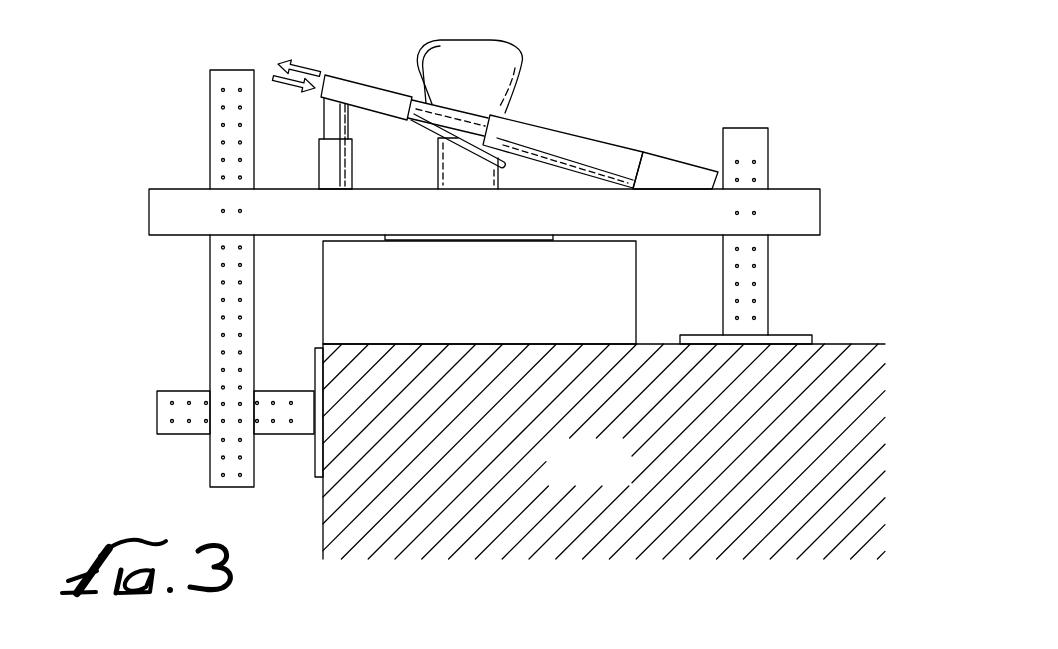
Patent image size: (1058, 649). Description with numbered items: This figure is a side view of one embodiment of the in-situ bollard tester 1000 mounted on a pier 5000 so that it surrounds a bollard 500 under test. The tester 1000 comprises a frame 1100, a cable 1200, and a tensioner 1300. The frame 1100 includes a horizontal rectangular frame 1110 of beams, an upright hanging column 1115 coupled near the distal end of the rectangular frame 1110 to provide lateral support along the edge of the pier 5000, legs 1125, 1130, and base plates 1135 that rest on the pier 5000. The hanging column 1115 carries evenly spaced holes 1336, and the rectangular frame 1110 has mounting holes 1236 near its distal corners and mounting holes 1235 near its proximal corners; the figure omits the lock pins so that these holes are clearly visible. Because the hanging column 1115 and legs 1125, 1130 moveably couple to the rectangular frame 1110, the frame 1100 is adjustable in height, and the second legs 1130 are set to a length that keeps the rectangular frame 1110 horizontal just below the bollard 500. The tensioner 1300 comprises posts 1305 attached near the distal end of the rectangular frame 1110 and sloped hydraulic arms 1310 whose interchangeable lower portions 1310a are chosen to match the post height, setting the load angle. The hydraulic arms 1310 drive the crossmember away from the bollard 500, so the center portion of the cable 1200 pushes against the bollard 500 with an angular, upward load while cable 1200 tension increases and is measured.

The in-situ bollard tester 1000 is at (895, 98).
The frame 1100 is at (108, 120).
The rectangular frame 1110 is at (820, 215).
The hanging column 1115 is at (210, 86).
The leg 1125 is at (745, 128).
The leg 1130 is at (170, 391).
The base plate 1135 is at (795, 335).
The cable 1200 is at (505, 168).
The mounting hole 1235 is at (756, 213).
The mounting hole 1236 is at (221, 211).
The tensioner 1300 is at (560, 92).
The post 1305 is at (369, 169).
The hydraulic arm 1310 is at (580, 132).
The lower portion of hydraulic arm 1310a is at (682, 157).
The hole 1336 is at (221, 402).
The bollard 500 is at (405, 42).
The pier 5000 is at (625, 472).